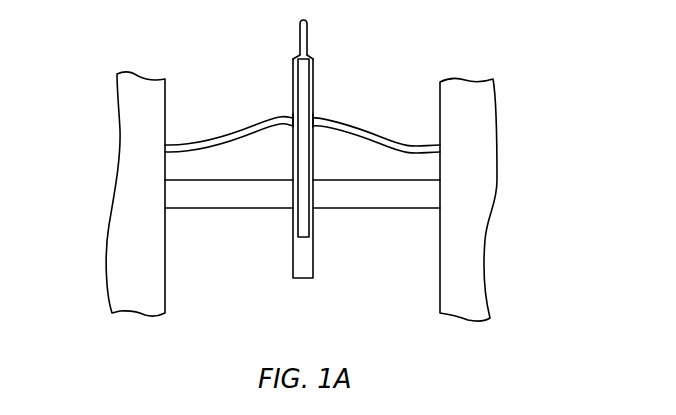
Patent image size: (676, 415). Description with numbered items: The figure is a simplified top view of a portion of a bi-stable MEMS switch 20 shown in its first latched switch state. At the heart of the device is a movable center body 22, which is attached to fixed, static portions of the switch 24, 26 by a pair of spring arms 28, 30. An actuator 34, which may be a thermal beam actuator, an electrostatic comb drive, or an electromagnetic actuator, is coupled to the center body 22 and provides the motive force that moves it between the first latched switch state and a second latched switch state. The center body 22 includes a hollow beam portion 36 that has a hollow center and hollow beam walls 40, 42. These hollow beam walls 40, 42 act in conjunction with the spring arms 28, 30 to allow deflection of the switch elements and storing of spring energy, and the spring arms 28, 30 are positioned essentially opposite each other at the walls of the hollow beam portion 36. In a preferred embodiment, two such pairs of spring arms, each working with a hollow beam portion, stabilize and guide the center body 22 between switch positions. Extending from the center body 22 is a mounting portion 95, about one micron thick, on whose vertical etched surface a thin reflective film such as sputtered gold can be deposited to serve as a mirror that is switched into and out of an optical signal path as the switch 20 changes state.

The bi-stable MEMS switch 20 is at (518, 71).
The movable center body 22 is at (313, 263).
The fixed portion of the switch 24 is at (118, 179).
The fixed portion of the switch 26 is at (496, 182).
The spring arm 28 is at (213, 133).
The spring arm 30 is at (392, 138).
The actuator 34 is at (331, 181).
The hollow beam portion 36 is at (306, 78).
The hollow beam wall 40 is at (317, 108).
The hollow beam wall 42 is at (293, 109).
The mounting portion 95 is at (307, 18).